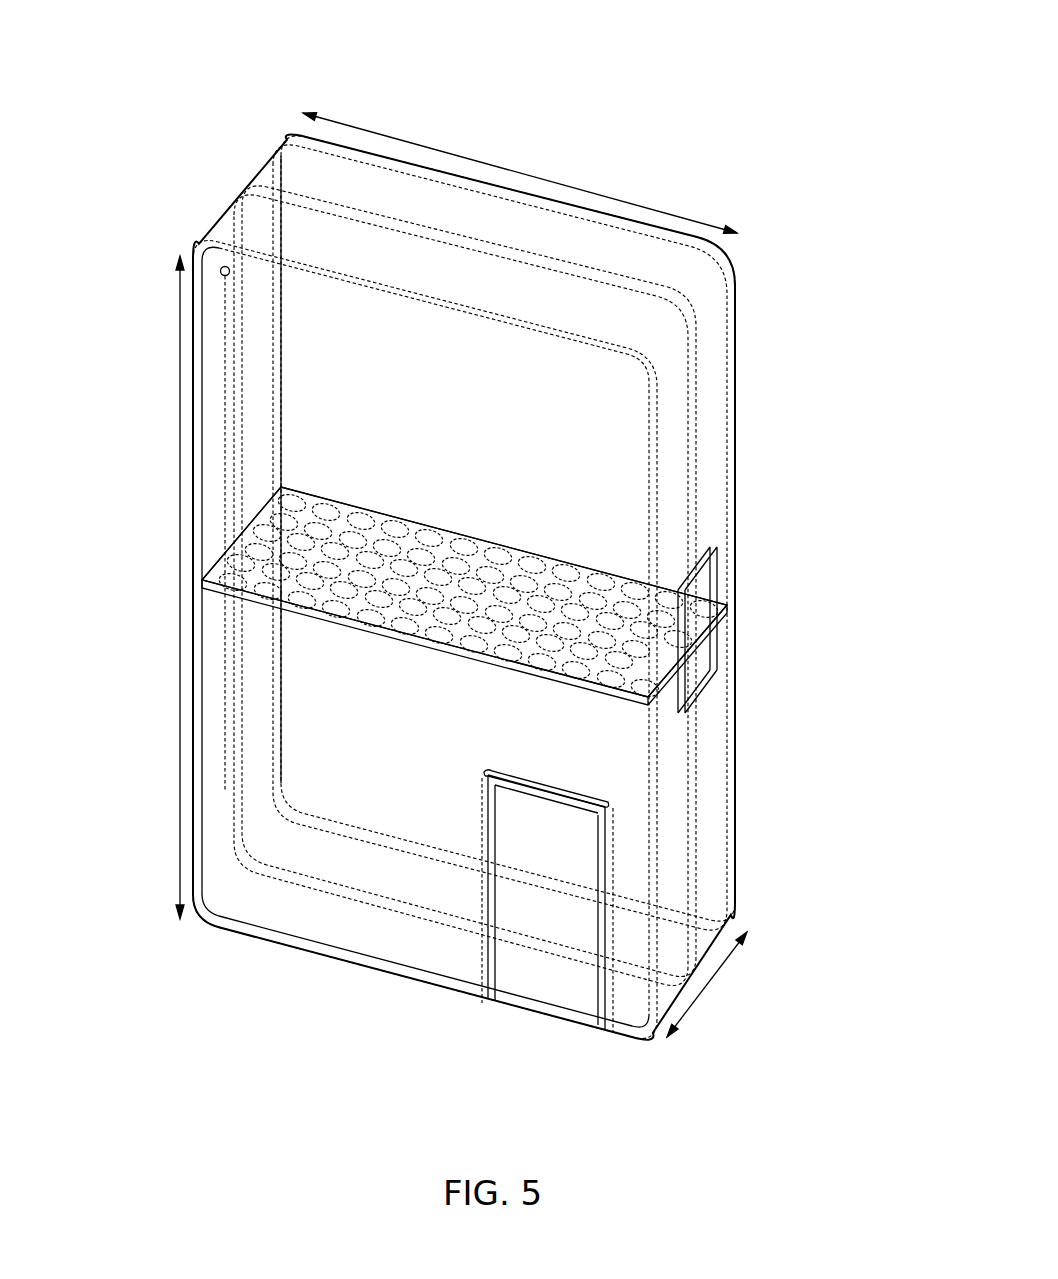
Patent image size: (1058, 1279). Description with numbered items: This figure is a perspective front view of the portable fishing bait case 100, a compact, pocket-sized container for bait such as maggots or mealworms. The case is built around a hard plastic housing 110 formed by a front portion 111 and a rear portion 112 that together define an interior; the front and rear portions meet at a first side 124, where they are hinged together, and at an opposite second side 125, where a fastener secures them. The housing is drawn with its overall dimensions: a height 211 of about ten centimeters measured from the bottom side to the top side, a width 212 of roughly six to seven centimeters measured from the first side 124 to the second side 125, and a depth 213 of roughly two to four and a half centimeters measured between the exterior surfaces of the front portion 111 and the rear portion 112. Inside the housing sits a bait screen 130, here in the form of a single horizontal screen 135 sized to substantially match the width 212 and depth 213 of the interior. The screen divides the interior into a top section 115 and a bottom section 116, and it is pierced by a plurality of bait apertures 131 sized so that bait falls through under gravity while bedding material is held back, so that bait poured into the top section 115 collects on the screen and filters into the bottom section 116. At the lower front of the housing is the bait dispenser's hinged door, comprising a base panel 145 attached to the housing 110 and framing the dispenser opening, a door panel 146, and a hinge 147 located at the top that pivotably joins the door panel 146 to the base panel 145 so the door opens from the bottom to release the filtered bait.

The portable fishing bait case 100 is at (737, 82).
The housing 110 is at (313, 182).
The front portion 111 is at (355, 953).
The rear portion 112 is at (716, 890).
The top section 115 is at (565, 505).
The bottom section 116 is at (403, 925).
The first side 124 is at (240, 195).
The second side 125 is at (723, 527).
The bait screen 130 is at (580, 575).
The bait apertures 131 is at (336, 606).
The single horizontal screen 135 is at (627, 580).
The base panel 145 is at (616, 848).
The door panel 146 is at (548, 977).
The hinge 147 is at (563, 790).
The height 211 is at (180, 518).
The width 212 is at (482, 160).
The depth 213 is at (712, 980).